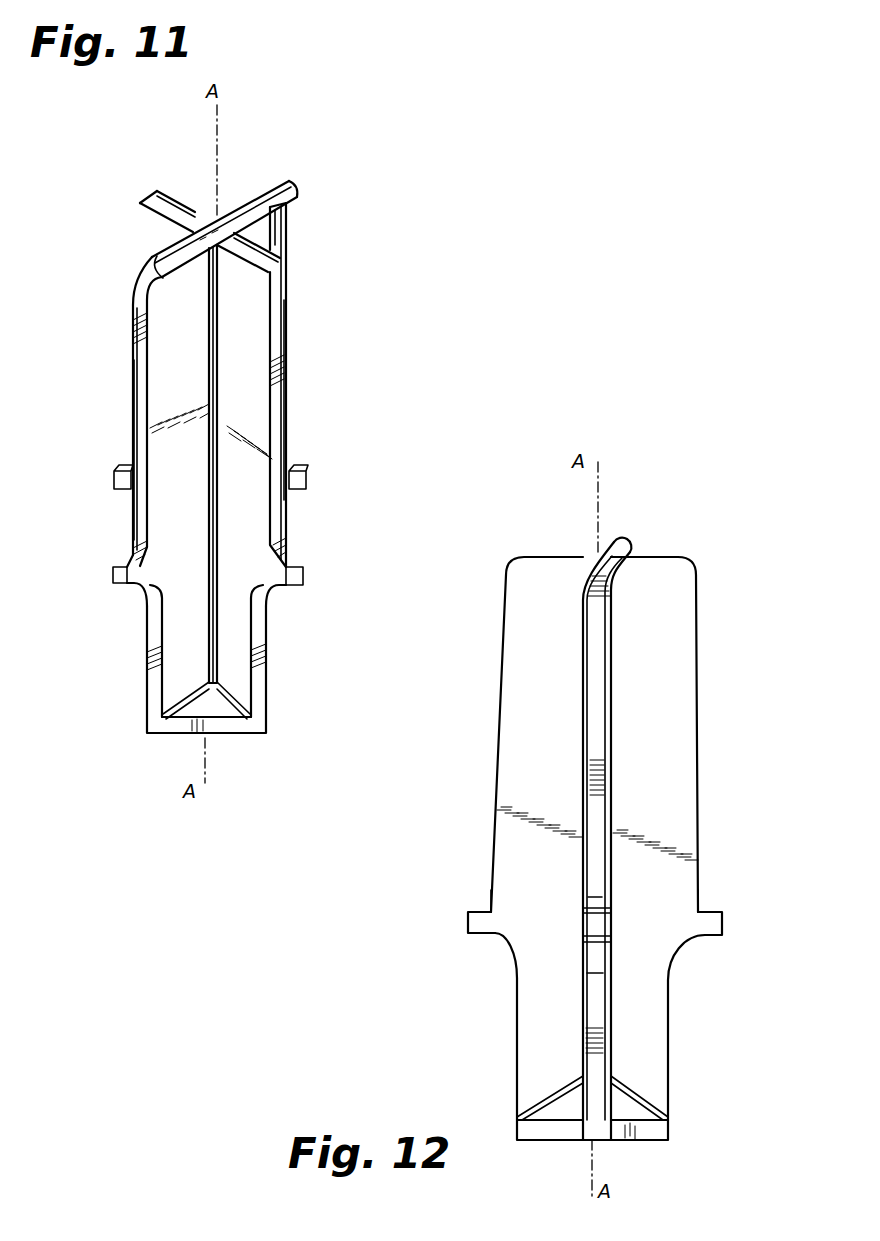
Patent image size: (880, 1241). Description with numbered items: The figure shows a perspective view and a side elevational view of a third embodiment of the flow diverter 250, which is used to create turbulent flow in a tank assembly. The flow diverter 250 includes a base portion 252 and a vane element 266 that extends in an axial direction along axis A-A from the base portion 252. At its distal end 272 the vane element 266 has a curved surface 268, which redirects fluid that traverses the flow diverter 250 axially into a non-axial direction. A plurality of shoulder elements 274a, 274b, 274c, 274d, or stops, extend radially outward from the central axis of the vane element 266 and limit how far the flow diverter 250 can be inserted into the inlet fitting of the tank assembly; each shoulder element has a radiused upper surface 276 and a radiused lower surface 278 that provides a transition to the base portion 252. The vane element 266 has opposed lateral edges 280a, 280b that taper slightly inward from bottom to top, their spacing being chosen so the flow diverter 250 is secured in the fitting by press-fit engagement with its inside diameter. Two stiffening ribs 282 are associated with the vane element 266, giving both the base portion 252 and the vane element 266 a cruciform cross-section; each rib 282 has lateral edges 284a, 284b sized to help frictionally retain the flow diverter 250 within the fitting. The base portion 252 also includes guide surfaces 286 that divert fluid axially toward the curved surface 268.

In FIG. 11, the flow diverter 250 is at (370, 166).
In FIG. 12, the flow diverter 250 is at (745, 530).
In FIG. 11, the base portion 252 is at (273, 656).
In FIG. 12, the base portion 252 is at (685, 1040).
In FIG. 11, the vane element 266 is at (286, 317).
In FIG. 11, the curved surface 268 is at (134, 316).
In FIG. 12, the curved surface 268 is at (622, 573).
In FIG. 11, the distal end 272 is at (241, 212).
In FIG. 12, the distal end 272 is at (624, 527).
In FIG. 11, the shoulder element 274a is at (115, 574).
In FIG. 11, the shoulder element 274b is at (116, 478).
In FIG. 12, the shoulder element 274b is at (468, 921).
In FIG. 11, the shoulder element 274c is at (300, 478).
In FIG. 12, the shoulder element 274c is at (600, 923).
In FIG. 11, the shoulder element 274d is at (303, 573).
In FIG. 12, the shoulder element 274d is at (722, 928).
In FIG. 11, the radiused upper surface 276 is at (128, 548).
In FIG. 12, the radiused upper surface 276 is at (490, 910).
In FIG. 11, the radiused lower surface 278 is at (140, 588).
In FIG. 12, the radiused lower surface 278 is at (500, 942).
In FIG. 11, the lateral edge 280a is at (137, 412).
In FIG. 11, the lateral edge 280b is at (283, 245).
In FIG. 12, the lateral edge 280b is at (593, 687).
In FIG. 11, the stiffening rib 282 is at (150, 218).
In FIG. 12, the stiffening rib 282 is at (500, 660).
In FIG. 11, the lateral edge of stiffening rib 284a is at (138, 236).
In FIG. 12, the lateral edge of stiffening rib 284a is at (699, 740).
In FIG. 11, the lateral edge of stiffening rib 284b is at (280, 391).
In FIG. 12, the lateral edge of stiffening rib 284b is at (497, 735).
In FIG. 11, the guide surface 286 is at (202, 706).
In FIG. 12, the guide surface 286 is at (555, 1107).